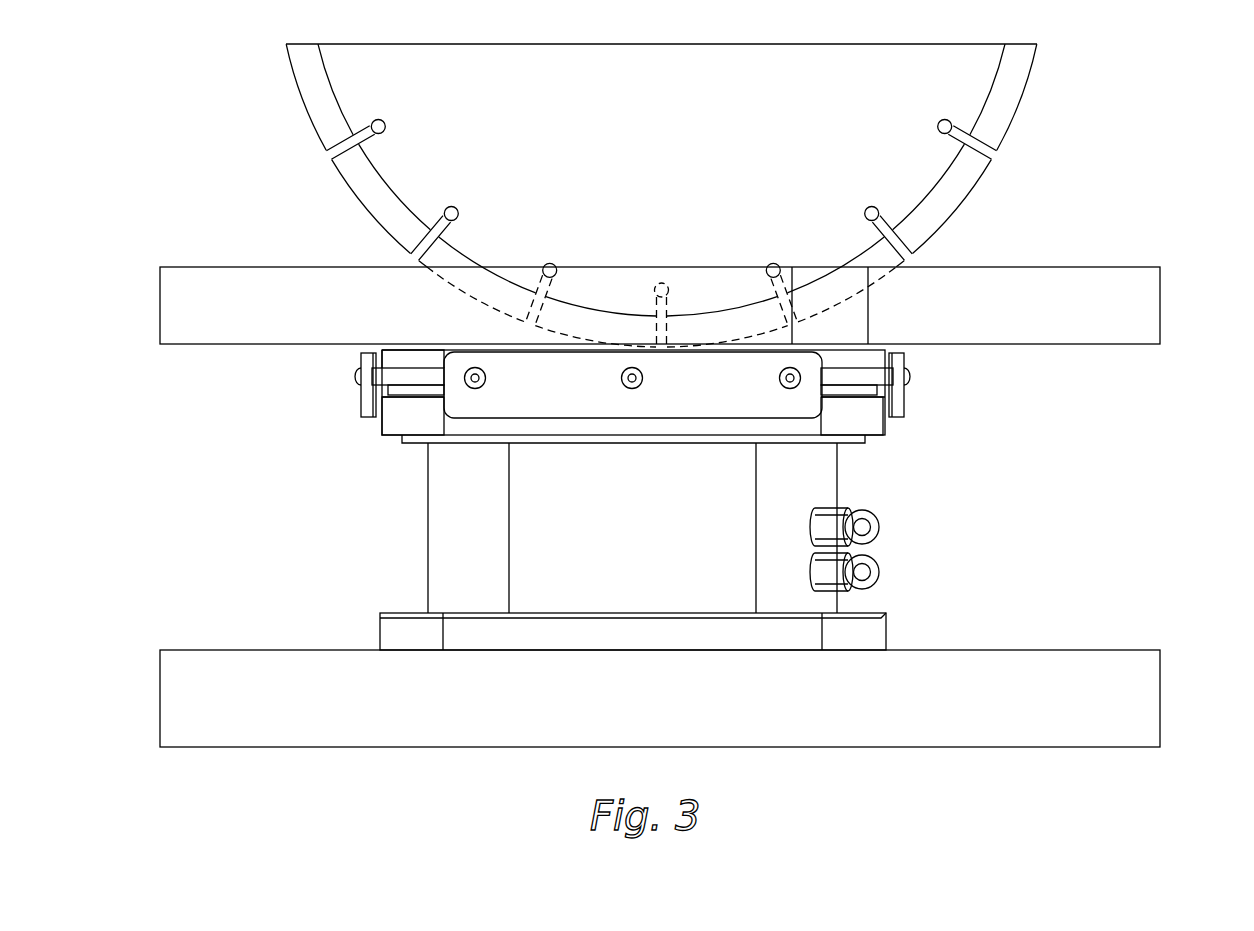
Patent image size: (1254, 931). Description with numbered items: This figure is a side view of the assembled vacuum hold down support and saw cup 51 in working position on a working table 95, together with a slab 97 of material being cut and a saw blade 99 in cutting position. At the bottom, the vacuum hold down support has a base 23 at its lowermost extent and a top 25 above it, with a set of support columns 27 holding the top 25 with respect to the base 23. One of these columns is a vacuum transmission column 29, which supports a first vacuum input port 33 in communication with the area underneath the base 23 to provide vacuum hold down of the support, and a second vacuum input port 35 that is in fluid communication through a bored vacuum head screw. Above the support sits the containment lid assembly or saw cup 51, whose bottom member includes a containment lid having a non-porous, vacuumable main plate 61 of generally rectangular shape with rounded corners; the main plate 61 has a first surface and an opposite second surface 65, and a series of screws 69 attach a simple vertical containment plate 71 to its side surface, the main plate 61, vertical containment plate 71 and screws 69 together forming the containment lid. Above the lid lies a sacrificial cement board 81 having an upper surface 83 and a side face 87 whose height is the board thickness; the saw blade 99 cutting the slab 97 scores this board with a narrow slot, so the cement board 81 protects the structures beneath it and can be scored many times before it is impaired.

The saw blade 99 is at (896, 105).
The slab 97 is at (1128, 267).
The working table 95 is at (232, 650).
The upper surface 83 is at (848, 343).
The side face 87 is at (407, 356).
The cement board 81 is at (360, 353).
The top 25 is at (905, 410).
The screws 69 is at (355, 378).
The vertical containment plate 71 is at (361, 410).
The second surface 65 is at (410, 387).
The main plate 61 is at (877, 420).
The saw cup 51 is at (1017, 350).
The support columns 27 is at (467, 550).
The vacuum transmission column 29 is at (786, 545).
The second vacuum input port 35 is at (881, 525).
The first vacuum input port 33 is at (881, 572).
The base 23 is at (886, 632).